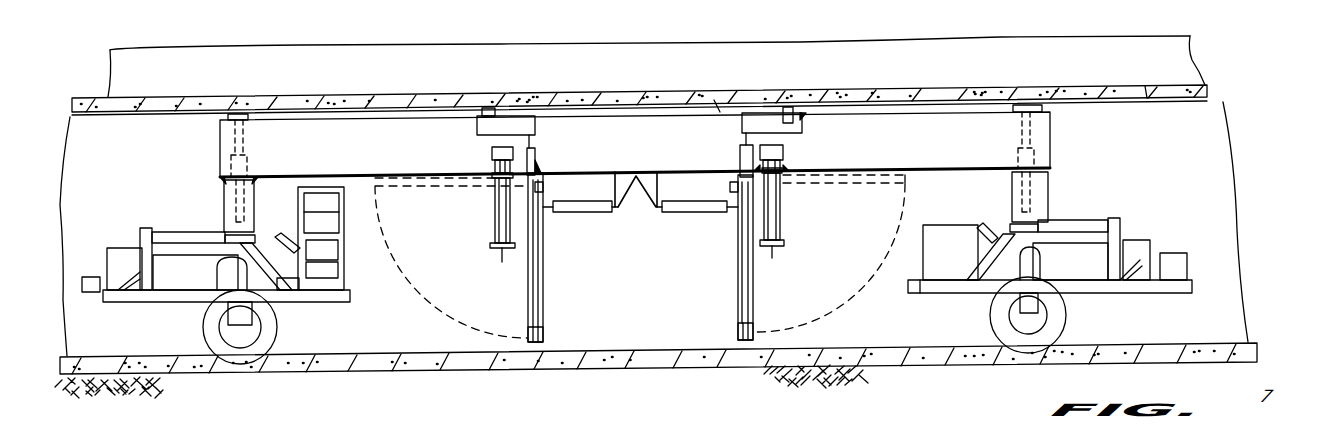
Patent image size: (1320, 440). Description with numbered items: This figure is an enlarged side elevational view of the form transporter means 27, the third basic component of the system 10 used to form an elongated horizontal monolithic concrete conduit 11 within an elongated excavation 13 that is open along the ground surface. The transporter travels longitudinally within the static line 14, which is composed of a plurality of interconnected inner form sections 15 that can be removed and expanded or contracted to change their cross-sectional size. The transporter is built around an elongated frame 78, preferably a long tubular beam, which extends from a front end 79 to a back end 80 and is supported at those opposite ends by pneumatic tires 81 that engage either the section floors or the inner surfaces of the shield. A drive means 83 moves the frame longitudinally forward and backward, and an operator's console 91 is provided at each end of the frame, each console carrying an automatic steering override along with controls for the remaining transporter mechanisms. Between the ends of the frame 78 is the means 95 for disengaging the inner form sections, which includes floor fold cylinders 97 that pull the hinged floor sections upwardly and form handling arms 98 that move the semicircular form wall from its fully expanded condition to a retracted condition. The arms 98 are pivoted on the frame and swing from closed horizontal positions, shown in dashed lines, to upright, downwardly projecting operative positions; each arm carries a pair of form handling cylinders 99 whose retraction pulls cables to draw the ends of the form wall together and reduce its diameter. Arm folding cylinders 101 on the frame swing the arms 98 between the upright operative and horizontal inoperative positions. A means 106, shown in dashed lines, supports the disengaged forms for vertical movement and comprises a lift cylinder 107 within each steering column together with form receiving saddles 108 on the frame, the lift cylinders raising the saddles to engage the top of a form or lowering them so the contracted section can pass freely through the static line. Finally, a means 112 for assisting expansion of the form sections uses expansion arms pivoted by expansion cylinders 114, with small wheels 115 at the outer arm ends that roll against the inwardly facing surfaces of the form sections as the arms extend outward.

The system 10 is at (1217, 92).
The monolithic concrete conduit 11 is at (1182, 92).
The excavation 13 is at (882, 383).
The static line 14 is at (980, 93).
The form sections 15 is at (1145, 92).
The form transporter means 27 is at (717, 108).
The elongated frame 78 is at (893, 118).
The front end 79 is at (228, 148).
The back end 80 is at (1052, 140).
The pneumatic tires 81 is at (255, 206).
The drive means 83 is at (113, 250).
The operator's console 91 is at (296, 244).
The means for disengaging the inner form sections 95 is at (701, 164).
The floor fold cylinders 97 is at (492, 223).
The form handling arms 98 is at (545, 280).
The form handling cylinders 99 is at (543, 238).
The arm folding cylinders 101 is at (677, 212).
The means for supporting the disengaged forms 106 is at (248, 156).
The lift cylinder 107 is at (250, 170).
The form receiving saddles 108 is at (534, 121).
The means for assisting expansion 112 is at (495, 142).
The expansion cylinders 114 is at (537, 158).
The small wheels 115 is at (543, 186).